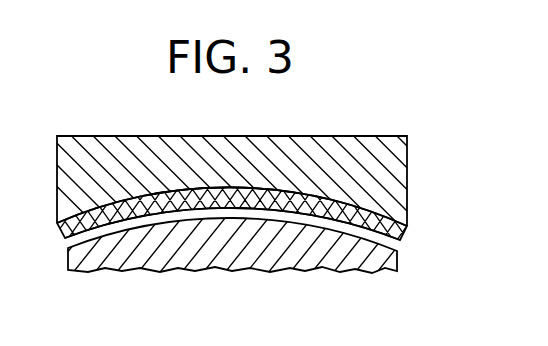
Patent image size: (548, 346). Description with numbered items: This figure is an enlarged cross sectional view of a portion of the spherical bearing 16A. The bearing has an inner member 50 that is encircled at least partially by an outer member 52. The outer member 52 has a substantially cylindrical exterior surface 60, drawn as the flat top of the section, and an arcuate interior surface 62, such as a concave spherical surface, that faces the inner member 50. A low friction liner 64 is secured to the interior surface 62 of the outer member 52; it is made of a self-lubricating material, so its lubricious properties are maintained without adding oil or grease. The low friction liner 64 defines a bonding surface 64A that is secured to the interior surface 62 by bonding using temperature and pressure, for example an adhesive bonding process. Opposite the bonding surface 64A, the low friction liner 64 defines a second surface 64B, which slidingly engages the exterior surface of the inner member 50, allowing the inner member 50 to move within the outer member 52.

The spherical bearing 16A is at (400, 120).
The inner member 50 is at (397, 262).
The outer member 52 is at (402, 158).
The exterior surface 60 is at (312, 135).
The interior surface 62 is at (192, 192).
The low friction liner 64 is at (404, 236).
The bonding surface 64A is at (256, 188).
The second surface 64B is at (138, 224).